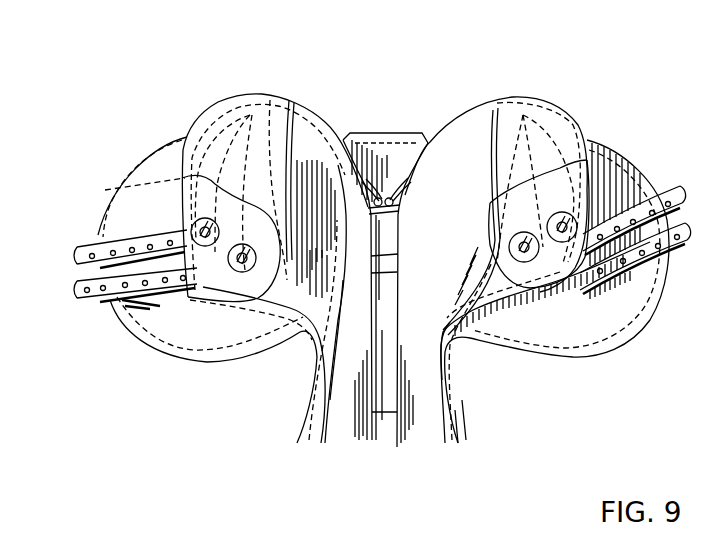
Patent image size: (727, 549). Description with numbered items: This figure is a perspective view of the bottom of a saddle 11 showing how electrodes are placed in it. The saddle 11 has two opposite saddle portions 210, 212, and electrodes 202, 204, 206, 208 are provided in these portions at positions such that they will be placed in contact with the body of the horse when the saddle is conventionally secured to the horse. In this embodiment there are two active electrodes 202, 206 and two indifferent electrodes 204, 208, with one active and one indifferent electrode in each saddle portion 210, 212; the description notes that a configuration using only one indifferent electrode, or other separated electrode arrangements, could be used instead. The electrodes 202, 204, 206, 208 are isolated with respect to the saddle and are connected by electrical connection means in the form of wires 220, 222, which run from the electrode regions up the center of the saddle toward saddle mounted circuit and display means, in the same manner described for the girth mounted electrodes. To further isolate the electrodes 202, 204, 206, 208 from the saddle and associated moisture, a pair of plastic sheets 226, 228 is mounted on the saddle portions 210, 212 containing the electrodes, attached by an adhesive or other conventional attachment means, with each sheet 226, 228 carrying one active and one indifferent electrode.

The saddle 11 is at (474, 432).
The active electrode 202 is at (608, 343).
The indifferent electrode 204 is at (525, 262).
The active electrode 206 is at (204, 247).
The indifferent electrode 208 is at (241, 273).
The saddle portion 210 is at (540, 113).
The saddle portion 212 is at (260, 113).
The wire 220 is at (398, 163).
The wire 222 is at (372, 133).
The plastic sheet 226 is at (563, 187).
The plastic sheet 228 is at (207, 197).